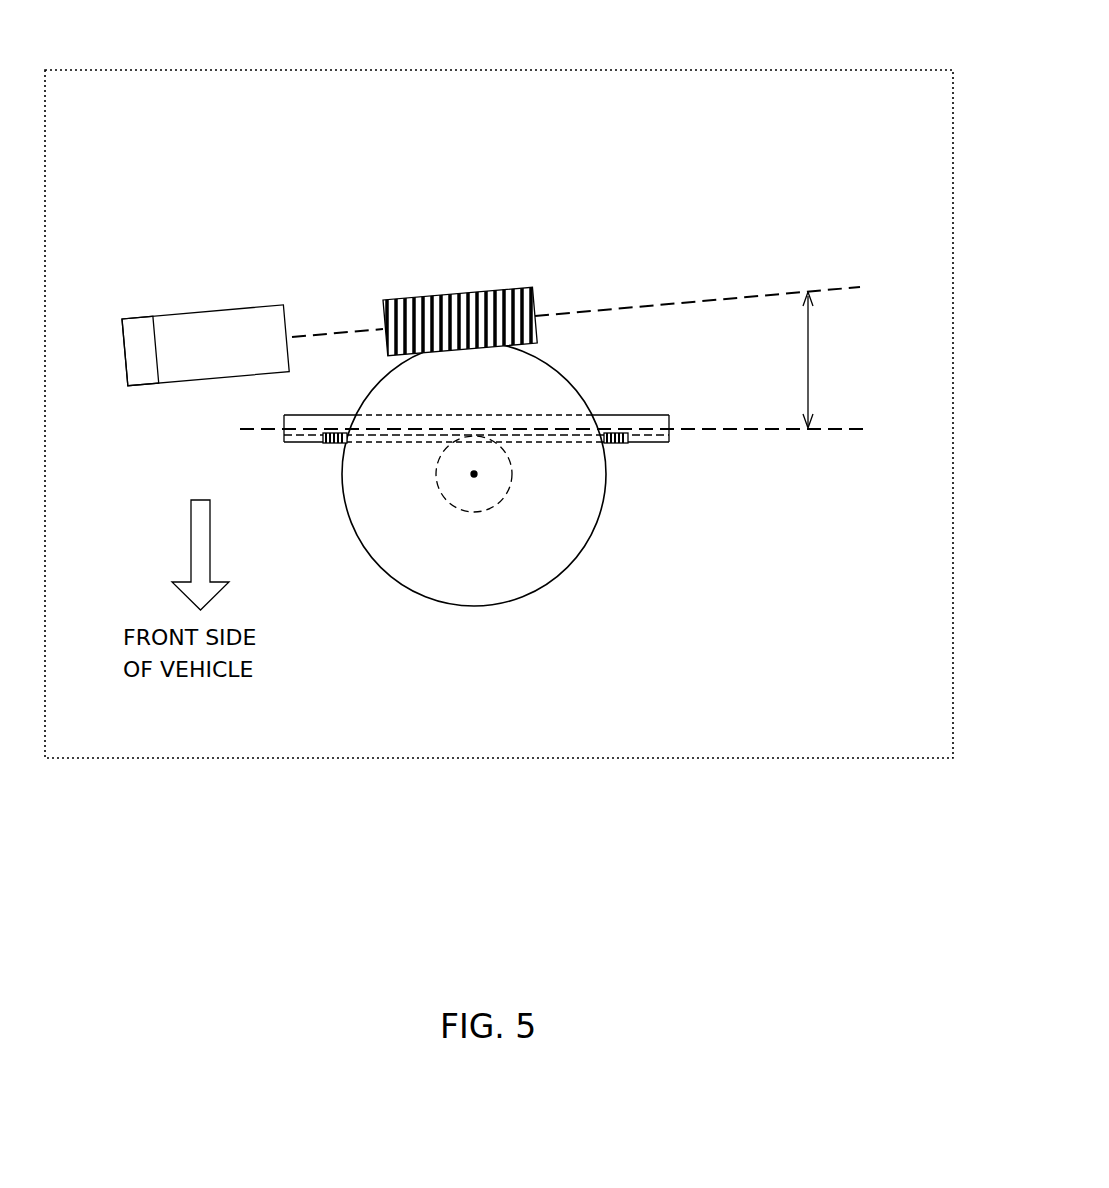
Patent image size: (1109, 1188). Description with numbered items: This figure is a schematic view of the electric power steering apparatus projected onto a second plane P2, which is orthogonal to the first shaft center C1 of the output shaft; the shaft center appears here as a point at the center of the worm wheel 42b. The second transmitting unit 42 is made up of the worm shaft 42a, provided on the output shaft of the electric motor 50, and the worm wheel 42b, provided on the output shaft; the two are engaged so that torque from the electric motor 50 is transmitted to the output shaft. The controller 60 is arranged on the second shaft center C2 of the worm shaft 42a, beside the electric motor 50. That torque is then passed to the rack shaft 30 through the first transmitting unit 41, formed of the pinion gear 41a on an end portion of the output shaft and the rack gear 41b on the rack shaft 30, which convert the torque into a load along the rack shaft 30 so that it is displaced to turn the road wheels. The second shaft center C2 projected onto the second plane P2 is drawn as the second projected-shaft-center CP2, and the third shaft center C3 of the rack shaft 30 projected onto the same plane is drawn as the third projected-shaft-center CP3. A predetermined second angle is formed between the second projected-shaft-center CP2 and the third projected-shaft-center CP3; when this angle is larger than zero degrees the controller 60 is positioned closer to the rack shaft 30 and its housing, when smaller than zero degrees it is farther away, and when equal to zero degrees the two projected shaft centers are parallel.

The second plane P2 is at (753, 70).
The first shaft center C1 is at (474, 476).
The electric motor 50 is at (195, 315).
The controller 60 is at (133, 320).
The second projected-shaft-center CP2 is at (576, 255).
The second shaft center C2 is at (732, 298).
The second transmitting unit 42 is at (492, 261).
The worm shaft 42a is at (512, 290).
The worm wheel 42b is at (563, 365).
The rack shaft 30 is at (652, 443).
The third projected-shaft-center CP3 is at (554, 503).
The third shaft center C3 is at (770, 432).
The first transmitting unit 41 is at (510, 562).
The pinion gear 41a is at (497, 507).
The rack gear 41b is at (617, 445).